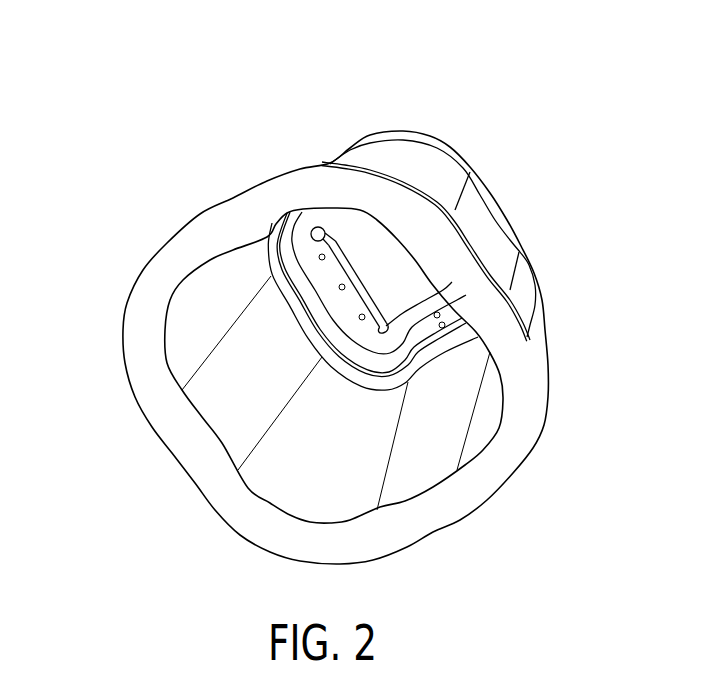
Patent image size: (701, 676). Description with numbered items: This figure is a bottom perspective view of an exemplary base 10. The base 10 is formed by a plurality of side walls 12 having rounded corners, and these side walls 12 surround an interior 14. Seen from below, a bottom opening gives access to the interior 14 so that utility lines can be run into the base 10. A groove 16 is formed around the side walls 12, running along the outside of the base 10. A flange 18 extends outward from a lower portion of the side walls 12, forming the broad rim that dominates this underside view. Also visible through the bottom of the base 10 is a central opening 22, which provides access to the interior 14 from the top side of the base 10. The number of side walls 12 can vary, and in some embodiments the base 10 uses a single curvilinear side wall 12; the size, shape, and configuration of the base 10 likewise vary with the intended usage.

The base 10 is at (115, 168).
The side walls 12 is at (507, 267).
The interior 14 is at (378, 429).
The groove 16 is at (413, 136).
The flange 18 is at (225, 220).
The central opening 22 is at (395, 253).